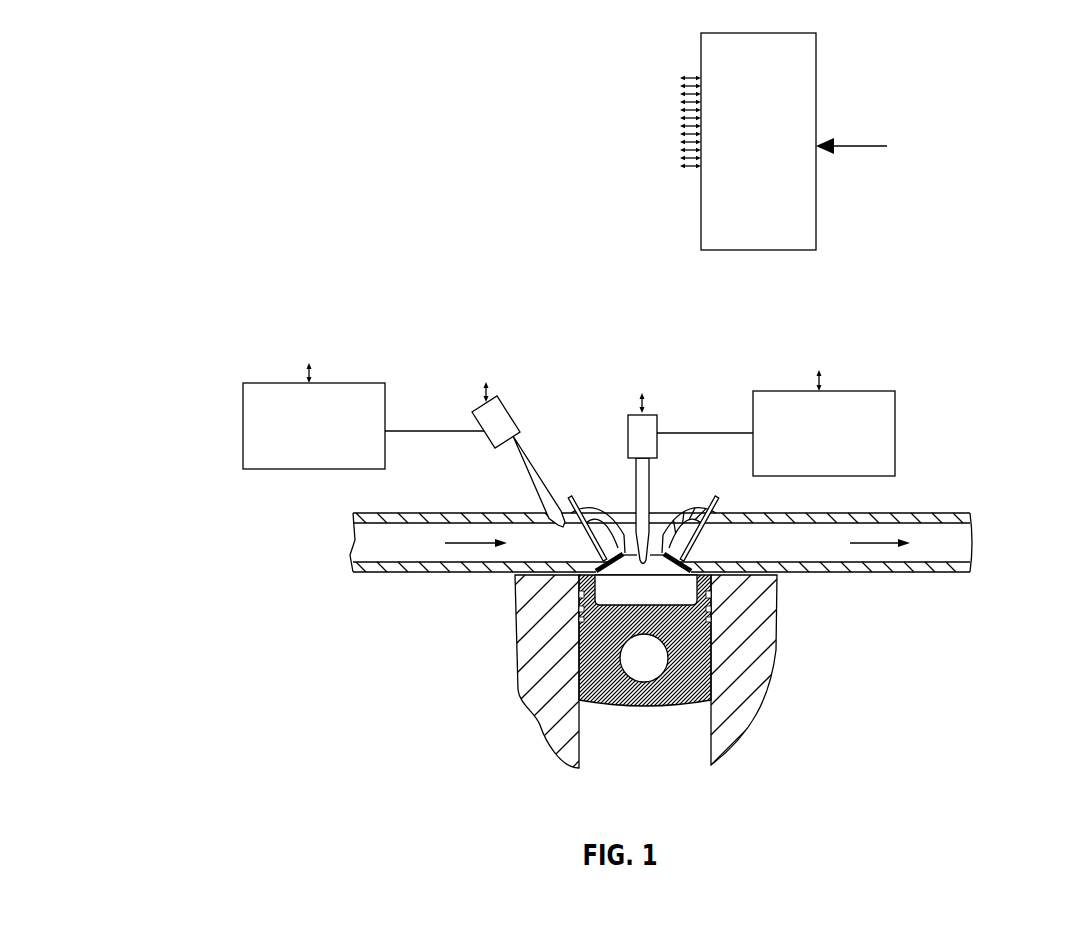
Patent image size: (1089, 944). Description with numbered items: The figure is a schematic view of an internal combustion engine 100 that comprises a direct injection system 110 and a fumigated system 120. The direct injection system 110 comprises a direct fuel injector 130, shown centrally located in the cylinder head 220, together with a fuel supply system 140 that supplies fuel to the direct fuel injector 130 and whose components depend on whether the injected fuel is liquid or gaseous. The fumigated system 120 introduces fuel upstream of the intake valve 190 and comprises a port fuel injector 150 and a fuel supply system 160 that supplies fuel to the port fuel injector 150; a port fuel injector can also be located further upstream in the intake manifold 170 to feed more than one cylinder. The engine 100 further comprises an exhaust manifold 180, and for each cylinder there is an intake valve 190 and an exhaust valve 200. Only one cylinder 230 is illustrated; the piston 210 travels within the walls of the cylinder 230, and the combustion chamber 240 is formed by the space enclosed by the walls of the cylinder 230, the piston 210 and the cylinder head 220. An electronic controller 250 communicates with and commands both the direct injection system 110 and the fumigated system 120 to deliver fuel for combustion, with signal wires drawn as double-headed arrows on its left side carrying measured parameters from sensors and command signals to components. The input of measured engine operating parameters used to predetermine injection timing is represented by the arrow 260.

The internal combustion engine 100 is at (353, 170).
The direct injection system 110 is at (920, 326).
The fumigated system 120 is at (360, 292).
The direct fuel injector 130 is at (630, 477).
The fuel supply system 140 is at (895, 420).
The port fuel injector 150 is at (471, 413).
The fuel supply system 160 is at (243, 412).
The intake manifold 170 is at (373, 541).
The exhaust manifold 180 is at (940, 538).
The intake valve 190 is at (595, 560).
The exhaust valve 200 is at (690, 549).
The piston 210 is at (581, 667).
The cylinder head 220 is at (652, 535).
The cylinder 230 is at (548, 615).
The combustion chamber 240 is at (629, 601).
The electronic controller 250 is at (739, 140).
The arrow 260 is at (875, 146).